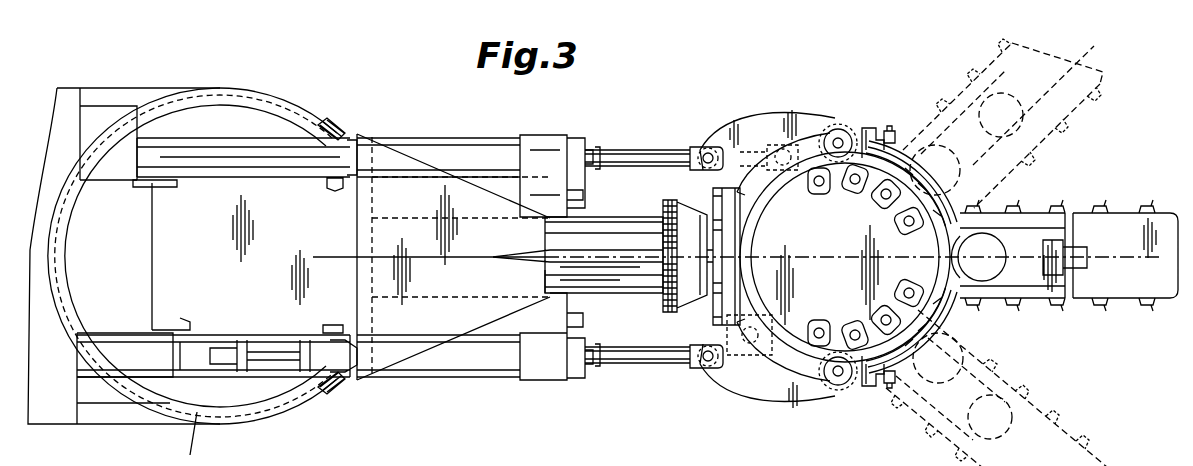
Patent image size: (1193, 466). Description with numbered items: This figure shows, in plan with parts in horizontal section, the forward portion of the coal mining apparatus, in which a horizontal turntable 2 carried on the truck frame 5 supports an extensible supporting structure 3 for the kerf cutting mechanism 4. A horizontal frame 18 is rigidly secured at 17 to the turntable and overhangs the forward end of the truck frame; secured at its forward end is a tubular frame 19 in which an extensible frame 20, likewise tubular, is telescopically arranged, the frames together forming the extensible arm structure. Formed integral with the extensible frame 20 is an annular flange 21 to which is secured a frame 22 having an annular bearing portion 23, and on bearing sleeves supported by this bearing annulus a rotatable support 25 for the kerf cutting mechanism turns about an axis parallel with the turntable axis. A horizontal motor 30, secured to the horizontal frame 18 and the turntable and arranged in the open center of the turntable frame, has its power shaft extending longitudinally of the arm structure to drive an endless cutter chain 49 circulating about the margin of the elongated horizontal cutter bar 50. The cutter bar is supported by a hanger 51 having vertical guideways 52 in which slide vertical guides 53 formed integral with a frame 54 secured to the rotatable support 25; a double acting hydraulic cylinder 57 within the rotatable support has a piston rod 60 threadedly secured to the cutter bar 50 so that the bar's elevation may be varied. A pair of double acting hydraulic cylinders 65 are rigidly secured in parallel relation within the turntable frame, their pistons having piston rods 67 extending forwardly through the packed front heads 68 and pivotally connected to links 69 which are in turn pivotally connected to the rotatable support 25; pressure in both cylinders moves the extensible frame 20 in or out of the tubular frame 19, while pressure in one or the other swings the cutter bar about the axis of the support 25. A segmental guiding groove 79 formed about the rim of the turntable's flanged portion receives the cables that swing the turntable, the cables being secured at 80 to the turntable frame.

The horizontal turntable 2 is at (167, 417).
The extensible supporting structure 3 is at (600, 216).
The kerf cutting mechanism 4 is at (1025, 207).
The truck frame 5 is at (327, 262).
The rigid securing connection 17 is at (357, 140).
The horizontal frame 18 is at (437, 190).
The tubular frame 19 is at (637, 290).
The extensible frame 20 is at (707, 303).
The annular flange 21 is at (716, 378).
The frame 22 is at (733, 185).
The annular bearing portion 23 is at (778, 176).
The rotatable support 25 is at (777, 378).
The horizontal motor 30 is at (207, 193).
The endless cutter chain 49 is at (1100, 210).
The cutter bar 50 is at (1125, 228).
The hanger 51 is at (950, 333).
The vertical guideways 52 is at (863, 128).
The vertical guides 53 is at (880, 140).
The frame 54 is at (903, 172).
The double acting hydraulic cylinder 57 is at (978, 243).
The piston rod 60 is at (258, 362).
The double acting hydraulic cylinders 65 is at (270, 147).
The piston rods 67 is at (607, 148).
The packed front heads 68 is at (575, 136).
The links 69 is at (780, 115).
The segmental guiding groove 79 is at (183, 96).
The cable securing point 80 is at (318, 122).